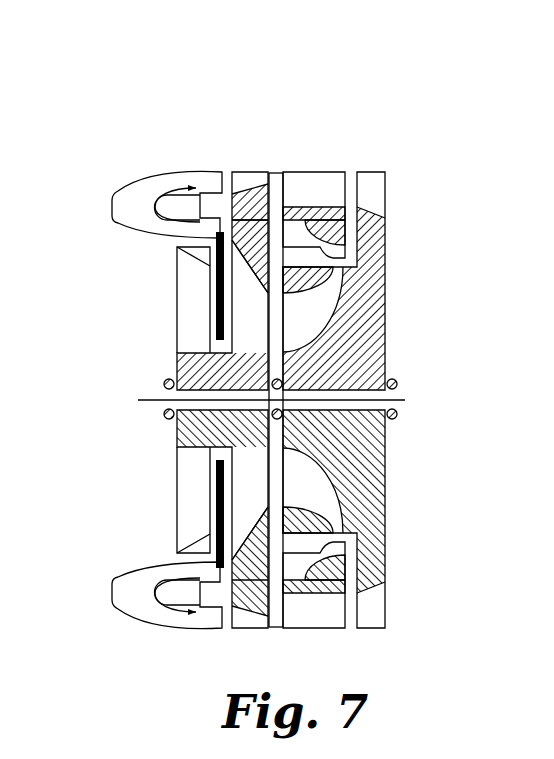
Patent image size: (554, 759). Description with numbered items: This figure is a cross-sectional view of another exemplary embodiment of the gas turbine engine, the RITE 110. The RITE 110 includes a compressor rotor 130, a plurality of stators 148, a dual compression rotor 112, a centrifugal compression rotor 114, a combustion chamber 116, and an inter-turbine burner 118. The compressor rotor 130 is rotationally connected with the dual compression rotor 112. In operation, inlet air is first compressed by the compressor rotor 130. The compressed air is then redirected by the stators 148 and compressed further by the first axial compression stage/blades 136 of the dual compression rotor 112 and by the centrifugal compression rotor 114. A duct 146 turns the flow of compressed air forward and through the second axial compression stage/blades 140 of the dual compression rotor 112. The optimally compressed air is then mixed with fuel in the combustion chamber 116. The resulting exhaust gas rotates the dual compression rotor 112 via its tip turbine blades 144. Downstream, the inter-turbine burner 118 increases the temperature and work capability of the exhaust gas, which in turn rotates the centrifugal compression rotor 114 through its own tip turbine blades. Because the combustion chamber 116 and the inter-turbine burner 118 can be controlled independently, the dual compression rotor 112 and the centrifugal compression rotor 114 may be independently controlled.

The RITE 110 is at (76, 112).
The dual compression rotor 112 is at (253, 171).
The centrifugal compression rotor 114 is at (387, 224).
The combustion chamber 116 is at (170, 177).
The inter-turbine burner 118 is at (332, 177).
The compressor rotor 130 is at (172, 260).
The first axial compression stage/blades 136 is at (252, 333).
The second axial compression stage/blades 140 is at (245, 227).
The tip turbine blades 144 is at (269, 172).
The duct 146 is at (309, 172).
The stators 148 is at (215, 282).